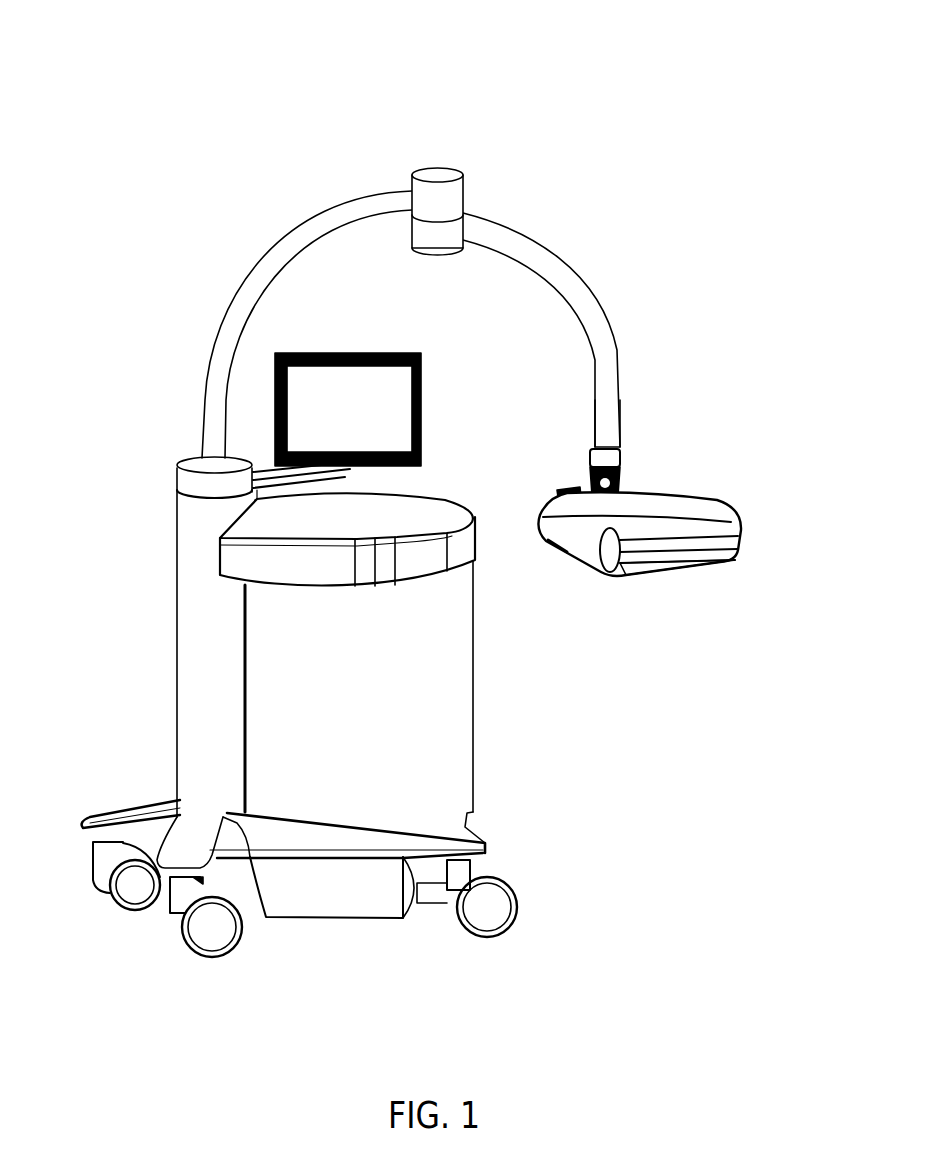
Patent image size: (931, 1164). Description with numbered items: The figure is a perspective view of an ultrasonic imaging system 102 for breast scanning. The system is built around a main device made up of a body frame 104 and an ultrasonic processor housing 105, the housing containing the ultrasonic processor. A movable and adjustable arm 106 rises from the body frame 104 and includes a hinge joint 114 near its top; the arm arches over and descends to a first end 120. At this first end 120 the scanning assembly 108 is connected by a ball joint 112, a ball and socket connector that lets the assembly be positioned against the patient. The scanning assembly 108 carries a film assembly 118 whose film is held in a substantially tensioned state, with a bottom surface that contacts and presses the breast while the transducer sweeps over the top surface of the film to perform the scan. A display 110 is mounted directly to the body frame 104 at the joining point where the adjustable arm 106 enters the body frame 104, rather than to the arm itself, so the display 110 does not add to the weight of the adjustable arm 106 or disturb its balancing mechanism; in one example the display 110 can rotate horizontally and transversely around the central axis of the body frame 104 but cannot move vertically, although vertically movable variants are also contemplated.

The ultrasonic imaging system 102 is at (713, 62).
The body frame 104 is at (190, 675).
The ultrasonic processor housing 105 is at (447, 497).
The adjustable arm 106 is at (345, 200).
The scanning assembly 108 is at (737, 507).
The display 110 is at (401, 375).
The ball joint 112 is at (588, 466).
The hinge joint 114 is at (453, 175).
The film assembly 118 is at (657, 575).
The first end of the adjustable arm 120 is at (645, 415).